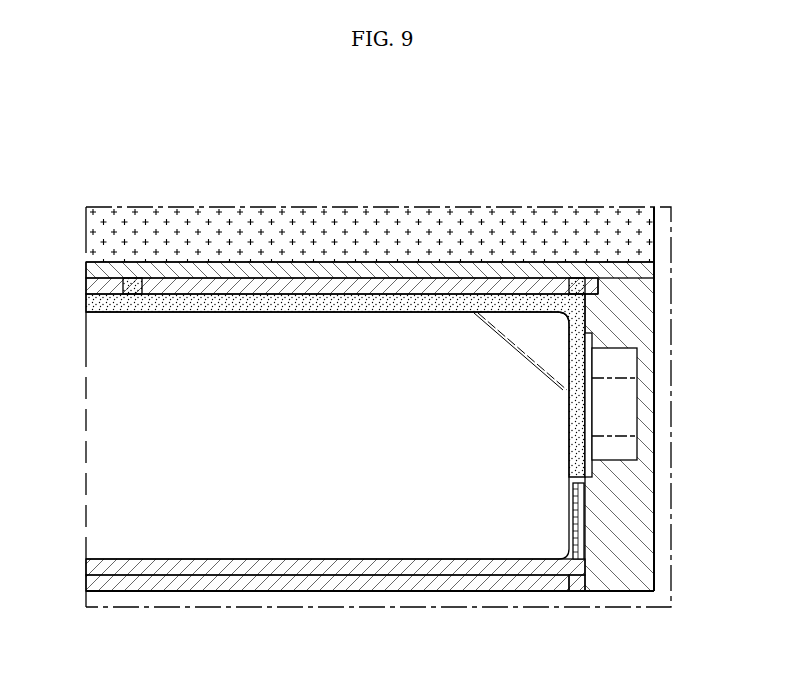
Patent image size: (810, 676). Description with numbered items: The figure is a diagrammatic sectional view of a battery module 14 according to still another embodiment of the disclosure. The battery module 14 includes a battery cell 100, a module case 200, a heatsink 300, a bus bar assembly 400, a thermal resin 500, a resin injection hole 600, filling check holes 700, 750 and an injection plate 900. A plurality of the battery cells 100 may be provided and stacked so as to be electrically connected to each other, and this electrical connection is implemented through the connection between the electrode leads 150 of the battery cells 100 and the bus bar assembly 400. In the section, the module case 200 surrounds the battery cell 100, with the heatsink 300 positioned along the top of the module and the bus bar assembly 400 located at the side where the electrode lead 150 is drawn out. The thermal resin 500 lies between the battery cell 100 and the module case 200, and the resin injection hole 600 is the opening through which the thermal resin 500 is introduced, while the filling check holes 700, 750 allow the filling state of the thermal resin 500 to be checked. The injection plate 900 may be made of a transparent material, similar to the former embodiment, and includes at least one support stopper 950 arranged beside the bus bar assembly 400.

The battery module 14 is at (181, 158).
The battery cell 100 is at (93, 440).
The electrode lead 150 is at (622, 403).
The module case 200 is at (94, 288).
The heatsink 300 is at (666, 227).
The bus bar assembly 400 is at (666, 442).
The thermal resin 500 is at (94, 303).
The resin injection hole 600 is at (128, 288).
The filling check hole 700 is at (578, 286).
The filling check hole 750 is at (572, 592).
The injection plate 900 is at (94, 566).
The support stopper 950 is at (588, 523).